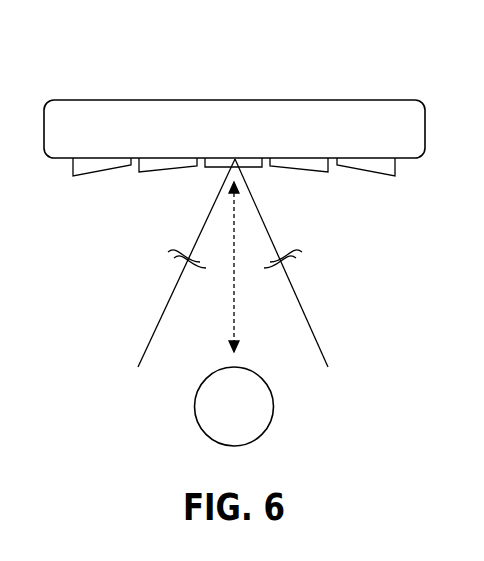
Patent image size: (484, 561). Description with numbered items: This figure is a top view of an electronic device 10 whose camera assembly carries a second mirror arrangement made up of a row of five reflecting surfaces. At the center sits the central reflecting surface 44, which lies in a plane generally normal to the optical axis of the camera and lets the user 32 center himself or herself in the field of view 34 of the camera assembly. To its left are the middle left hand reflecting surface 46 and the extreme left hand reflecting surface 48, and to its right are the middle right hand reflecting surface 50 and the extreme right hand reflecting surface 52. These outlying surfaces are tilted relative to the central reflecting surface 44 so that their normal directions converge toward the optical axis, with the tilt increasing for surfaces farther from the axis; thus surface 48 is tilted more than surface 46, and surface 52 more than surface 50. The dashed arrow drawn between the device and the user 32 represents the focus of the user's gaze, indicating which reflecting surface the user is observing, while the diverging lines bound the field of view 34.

The electronic device 10 is at (160, 122).
The extreme left hand reflecting surface 48 is at (86, 175).
The middle left hand reflecting surface 46 is at (156, 171).
The central reflecting surface 44 is at (215, 167).
The middle right hand reflecting surface 50 is at (312, 171).
The extreme right hand reflecting surface 52 is at (390, 177).
The field of view 34 is at (210, 342).
The user 32 is at (253, 418).